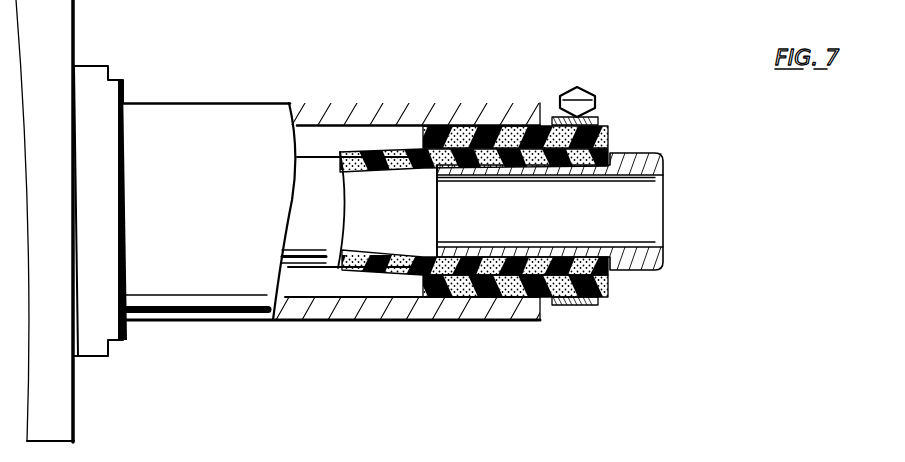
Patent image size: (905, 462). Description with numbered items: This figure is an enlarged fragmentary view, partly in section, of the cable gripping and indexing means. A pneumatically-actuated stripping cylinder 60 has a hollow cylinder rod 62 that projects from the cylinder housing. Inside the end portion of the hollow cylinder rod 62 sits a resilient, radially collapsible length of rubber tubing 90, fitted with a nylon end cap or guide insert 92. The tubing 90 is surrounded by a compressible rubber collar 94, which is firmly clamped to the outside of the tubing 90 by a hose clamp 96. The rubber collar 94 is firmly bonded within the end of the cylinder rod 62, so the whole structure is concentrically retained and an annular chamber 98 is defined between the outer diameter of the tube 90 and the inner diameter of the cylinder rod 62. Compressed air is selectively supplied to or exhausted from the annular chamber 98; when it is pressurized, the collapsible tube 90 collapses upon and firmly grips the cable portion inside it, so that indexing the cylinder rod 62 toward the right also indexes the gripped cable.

The stripping cylinder 60 is at (63, 223).
The hollow cylinder rod 62 is at (225, 223).
The rubber tubing 90 is at (323, 223).
The guide insert 92 is at (660, 162).
The rubber collar 94 is at (610, 293).
The hose clamp 96 is at (588, 93).
The annular chamber 98 is at (375, 287).